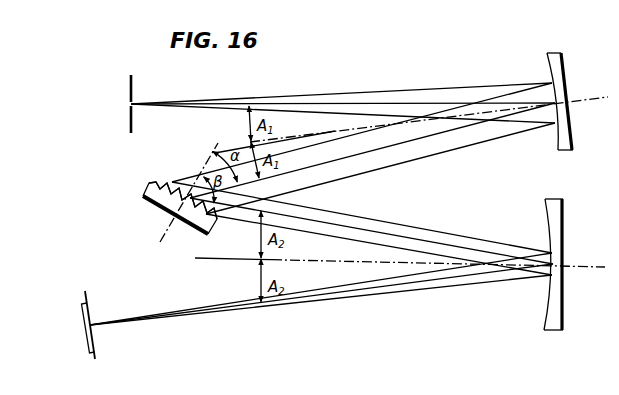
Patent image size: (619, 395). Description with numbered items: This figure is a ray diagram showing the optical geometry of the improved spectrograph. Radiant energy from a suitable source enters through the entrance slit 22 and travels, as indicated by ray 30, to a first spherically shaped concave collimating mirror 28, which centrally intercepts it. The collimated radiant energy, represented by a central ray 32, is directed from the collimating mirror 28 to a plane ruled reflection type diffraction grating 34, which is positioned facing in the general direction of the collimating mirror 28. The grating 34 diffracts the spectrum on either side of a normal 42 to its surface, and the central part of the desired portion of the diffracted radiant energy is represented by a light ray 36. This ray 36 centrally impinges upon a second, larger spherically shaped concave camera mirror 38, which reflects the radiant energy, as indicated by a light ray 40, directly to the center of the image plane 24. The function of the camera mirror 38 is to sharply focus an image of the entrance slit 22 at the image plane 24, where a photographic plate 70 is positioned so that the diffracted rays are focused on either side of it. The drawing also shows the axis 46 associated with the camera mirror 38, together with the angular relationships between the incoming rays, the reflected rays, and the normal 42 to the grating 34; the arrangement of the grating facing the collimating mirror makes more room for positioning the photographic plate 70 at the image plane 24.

The entrance slit 22 is at (127, 96).
The image plane 24 is at (88, 304).
The spherically shaped concave collimating mirror 28 is at (565, 131).
The ray 30 is at (348, 102).
The central ray 32 is at (318, 161).
The plane ruled reflection type diffraction grating 34 is at (143, 197).
The light ray 36 is at (402, 236).
The spherically shaped concave camera mirror 38 is at (558, 291).
The light ray 40 is at (353, 292).
The normal 42 is at (197, 182).
The optical axis of second mirror 46 is at (200, 259).
The photographic plate 70 is at (95, 343).